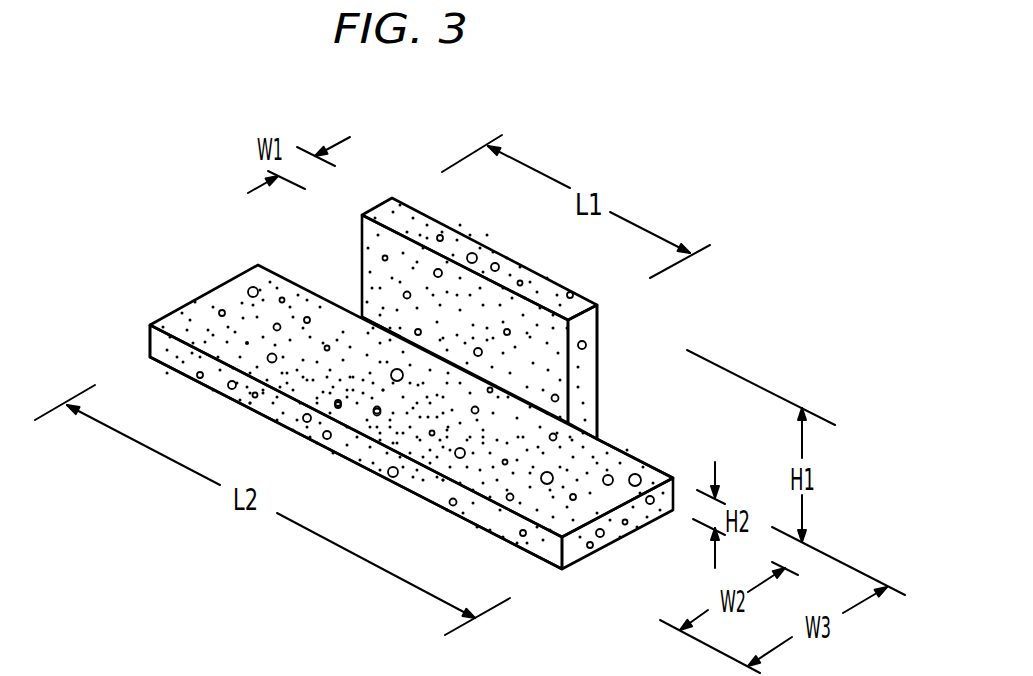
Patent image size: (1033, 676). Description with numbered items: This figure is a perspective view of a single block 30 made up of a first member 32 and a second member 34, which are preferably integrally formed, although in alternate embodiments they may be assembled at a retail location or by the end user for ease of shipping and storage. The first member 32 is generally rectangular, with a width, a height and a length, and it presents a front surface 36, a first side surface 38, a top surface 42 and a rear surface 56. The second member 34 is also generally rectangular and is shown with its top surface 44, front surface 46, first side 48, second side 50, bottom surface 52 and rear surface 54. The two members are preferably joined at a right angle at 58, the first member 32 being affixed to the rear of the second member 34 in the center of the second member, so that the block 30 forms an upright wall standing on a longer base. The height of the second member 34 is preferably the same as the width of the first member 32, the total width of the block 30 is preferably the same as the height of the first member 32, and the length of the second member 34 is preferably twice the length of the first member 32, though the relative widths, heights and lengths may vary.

The block 30 is at (185, 170).
The first member 32 is at (370, 265).
The second member 34 is at (242, 305).
The front surface 36 is at (543, 327).
The first side surface 38 is at (592, 391).
The top surface 42 is at (433, 232).
The top surface 44 is at (180, 320).
The front surface 46 is at (425, 490).
The first side 48 is at (582, 542).
The second side 50 is at (190, 308).
The bottom surface 52 is at (233, 400).
The rear surface 54 is at (647, 463).
The rear surface 56 is at (603, 367).
The right-angle joint 58 is at (360, 325).